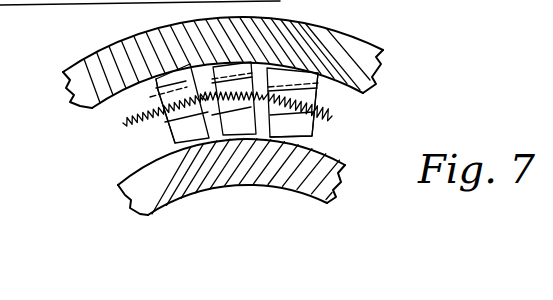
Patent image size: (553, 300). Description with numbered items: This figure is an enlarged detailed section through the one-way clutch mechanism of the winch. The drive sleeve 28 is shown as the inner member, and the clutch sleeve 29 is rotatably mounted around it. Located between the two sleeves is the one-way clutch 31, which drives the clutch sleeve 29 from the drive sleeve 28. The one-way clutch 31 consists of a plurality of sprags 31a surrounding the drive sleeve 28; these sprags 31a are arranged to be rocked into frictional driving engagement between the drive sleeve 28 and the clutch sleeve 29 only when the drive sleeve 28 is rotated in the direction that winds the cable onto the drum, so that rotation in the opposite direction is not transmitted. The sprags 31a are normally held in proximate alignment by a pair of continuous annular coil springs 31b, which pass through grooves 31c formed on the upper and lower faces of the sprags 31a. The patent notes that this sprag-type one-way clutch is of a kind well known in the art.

The drive sleeve 28 is at (177, 170).
The clutch sleeve 29 is at (353, 53).
The one-way clutch 31 is at (250, 137).
The sprags 31a is at (157, 88).
The annular coil springs 31b is at (330, 113).
The grooves 31c is at (315, 88).